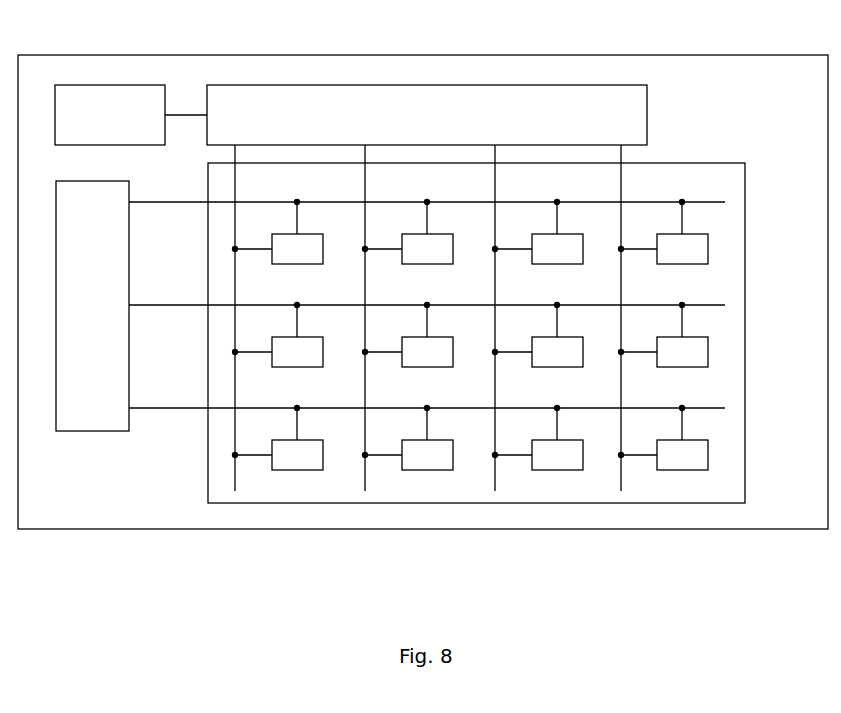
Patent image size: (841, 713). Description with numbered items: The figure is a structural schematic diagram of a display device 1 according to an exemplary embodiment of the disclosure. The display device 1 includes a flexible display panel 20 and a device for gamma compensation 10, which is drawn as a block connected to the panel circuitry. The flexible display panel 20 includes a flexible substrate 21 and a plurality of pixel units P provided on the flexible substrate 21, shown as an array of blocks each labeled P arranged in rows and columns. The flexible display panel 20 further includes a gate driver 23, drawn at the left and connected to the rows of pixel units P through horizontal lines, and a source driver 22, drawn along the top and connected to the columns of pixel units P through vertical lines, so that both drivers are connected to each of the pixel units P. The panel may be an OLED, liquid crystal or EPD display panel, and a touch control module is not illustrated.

The display device 1 is at (732, 63).
The device for gamma compensation 10 is at (131, 115).
The flexible display panel 20 is at (463, 311).
The flexible substrate 21 is at (725, 293).
The source driver 22 is at (427, 115).
The gate driver 23 is at (92, 306).